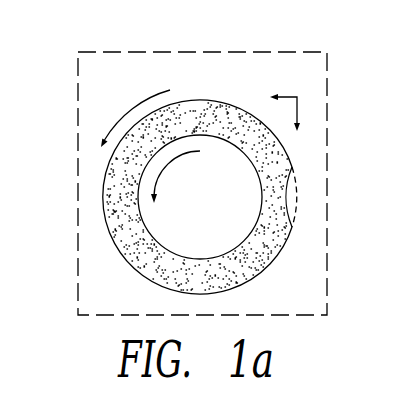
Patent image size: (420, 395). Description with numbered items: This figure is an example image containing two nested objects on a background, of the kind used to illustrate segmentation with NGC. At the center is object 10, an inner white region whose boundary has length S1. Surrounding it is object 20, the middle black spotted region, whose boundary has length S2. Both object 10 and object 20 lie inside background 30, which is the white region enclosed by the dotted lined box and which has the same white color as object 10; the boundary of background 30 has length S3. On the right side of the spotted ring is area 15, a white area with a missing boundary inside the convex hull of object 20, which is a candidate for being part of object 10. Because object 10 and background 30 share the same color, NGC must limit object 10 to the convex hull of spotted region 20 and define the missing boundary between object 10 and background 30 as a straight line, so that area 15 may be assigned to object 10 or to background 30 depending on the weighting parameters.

The object 10 is at (178, 220).
The area 15 is at (290, 194).
The object 20 is at (122, 186).
The background 30 is at (229, 61).
The boundary length S1 is at (175, 177).
The boundary length S2 is at (131, 118).
The boundary length S3 is at (283, 112).